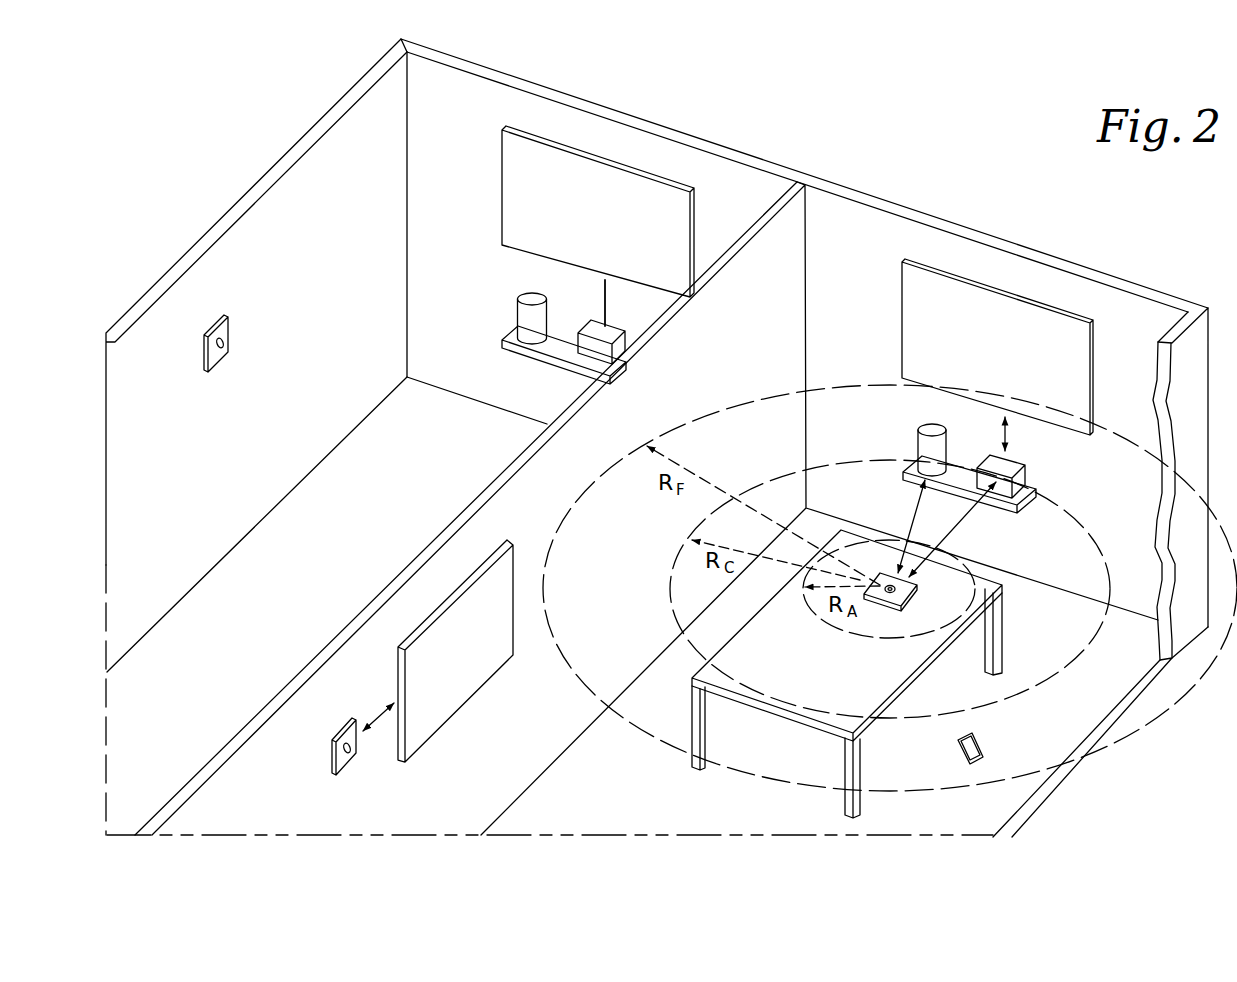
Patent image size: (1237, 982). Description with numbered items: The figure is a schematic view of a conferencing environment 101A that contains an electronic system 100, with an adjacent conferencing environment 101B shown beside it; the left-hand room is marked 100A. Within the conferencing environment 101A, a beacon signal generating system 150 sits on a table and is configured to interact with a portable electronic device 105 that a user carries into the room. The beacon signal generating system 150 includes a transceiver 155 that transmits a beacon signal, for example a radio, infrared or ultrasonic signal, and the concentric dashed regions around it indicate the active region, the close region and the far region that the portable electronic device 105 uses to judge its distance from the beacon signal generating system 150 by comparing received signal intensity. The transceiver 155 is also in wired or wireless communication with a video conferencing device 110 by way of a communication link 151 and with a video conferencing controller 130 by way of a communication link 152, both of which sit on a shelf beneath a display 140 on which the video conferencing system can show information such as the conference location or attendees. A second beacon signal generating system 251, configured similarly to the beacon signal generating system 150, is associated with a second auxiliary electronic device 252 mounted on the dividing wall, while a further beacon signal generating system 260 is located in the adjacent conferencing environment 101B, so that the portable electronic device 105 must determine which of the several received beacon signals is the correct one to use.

The electronic system 100 is at (770, 366).
The second room 100A is at (482, 210).
The conferencing environment 101A is at (1012, 280).
The adjacent conferencing environment 101B is at (611, 145).
The portable electronic device 105 is at (984, 742).
The video conferencing device 110 is at (918, 441).
The video conferencing controller 130 is at (1027, 471).
The display 140 is at (912, 320).
The beacon signal generating system 150 is at (913, 592).
The communication link 151 is at (917, 494).
The communication link 152 is at (958, 520).
The transceiver 155 is at (879, 606).
The second beacon signal generating system 251 is at (346, 768).
The second auxiliary electronic device 252 is at (467, 698).
The beacon signal generating system 260 is at (220, 364).